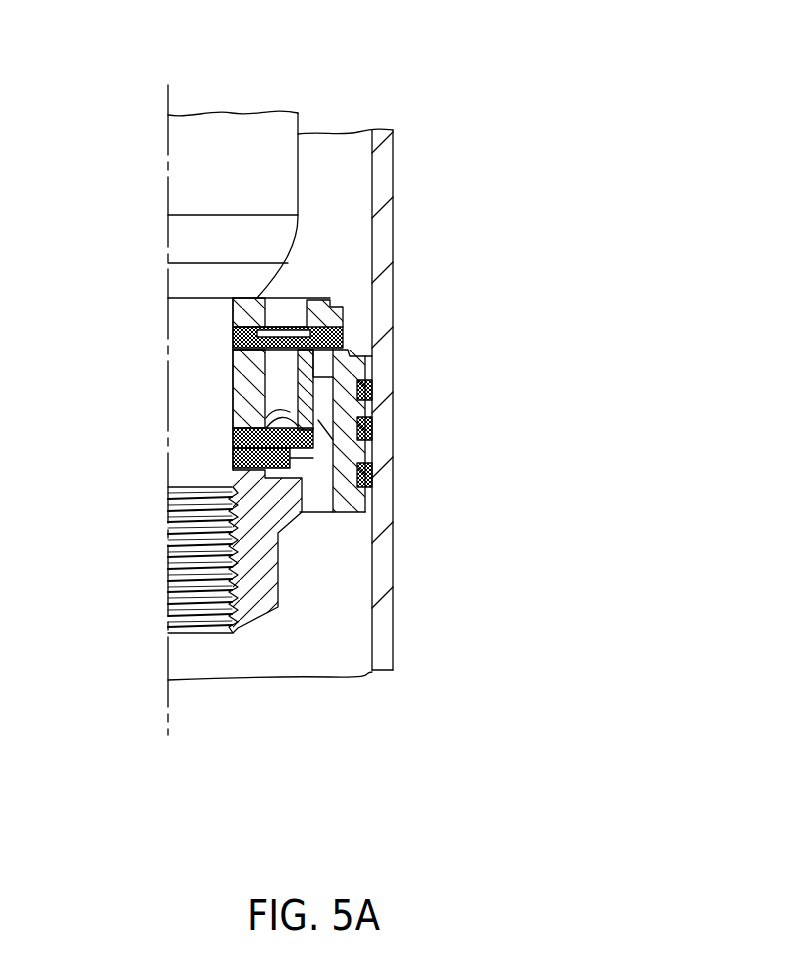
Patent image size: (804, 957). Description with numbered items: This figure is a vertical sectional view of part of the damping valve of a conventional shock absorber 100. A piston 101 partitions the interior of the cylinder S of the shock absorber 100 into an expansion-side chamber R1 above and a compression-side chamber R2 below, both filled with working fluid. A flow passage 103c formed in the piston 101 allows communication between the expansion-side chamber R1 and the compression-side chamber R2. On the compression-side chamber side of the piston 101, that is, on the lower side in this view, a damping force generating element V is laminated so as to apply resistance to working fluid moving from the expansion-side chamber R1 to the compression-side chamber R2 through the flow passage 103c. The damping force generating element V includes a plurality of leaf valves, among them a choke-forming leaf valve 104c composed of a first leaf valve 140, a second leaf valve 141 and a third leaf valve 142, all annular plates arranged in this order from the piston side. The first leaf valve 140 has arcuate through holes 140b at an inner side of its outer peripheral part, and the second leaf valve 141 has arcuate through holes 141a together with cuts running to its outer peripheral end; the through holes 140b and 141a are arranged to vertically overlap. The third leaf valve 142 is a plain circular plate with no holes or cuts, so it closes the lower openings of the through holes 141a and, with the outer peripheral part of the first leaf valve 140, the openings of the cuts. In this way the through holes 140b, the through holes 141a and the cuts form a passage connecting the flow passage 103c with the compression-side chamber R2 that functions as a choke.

The shock absorber 100 is at (390, 112).
The piston 101 is at (348, 358).
The flow passage 103c is at (281, 377).
The choke-forming leaf valve 104c is at (466, 425).
The first leaf valve 140 is at (368, 400).
The through holes 140b is at (287, 423).
The second leaf valve 141 is at (365, 435).
The through holes 141a is at (310, 453).
The third leaf valve 142 is at (414, 482).
The expansion-side chamber R1 is at (335, 212).
The compression-side chamber R2 is at (322, 615).
The cylinder S is at (383, 644).
The damping force generating element V is at (300, 461).